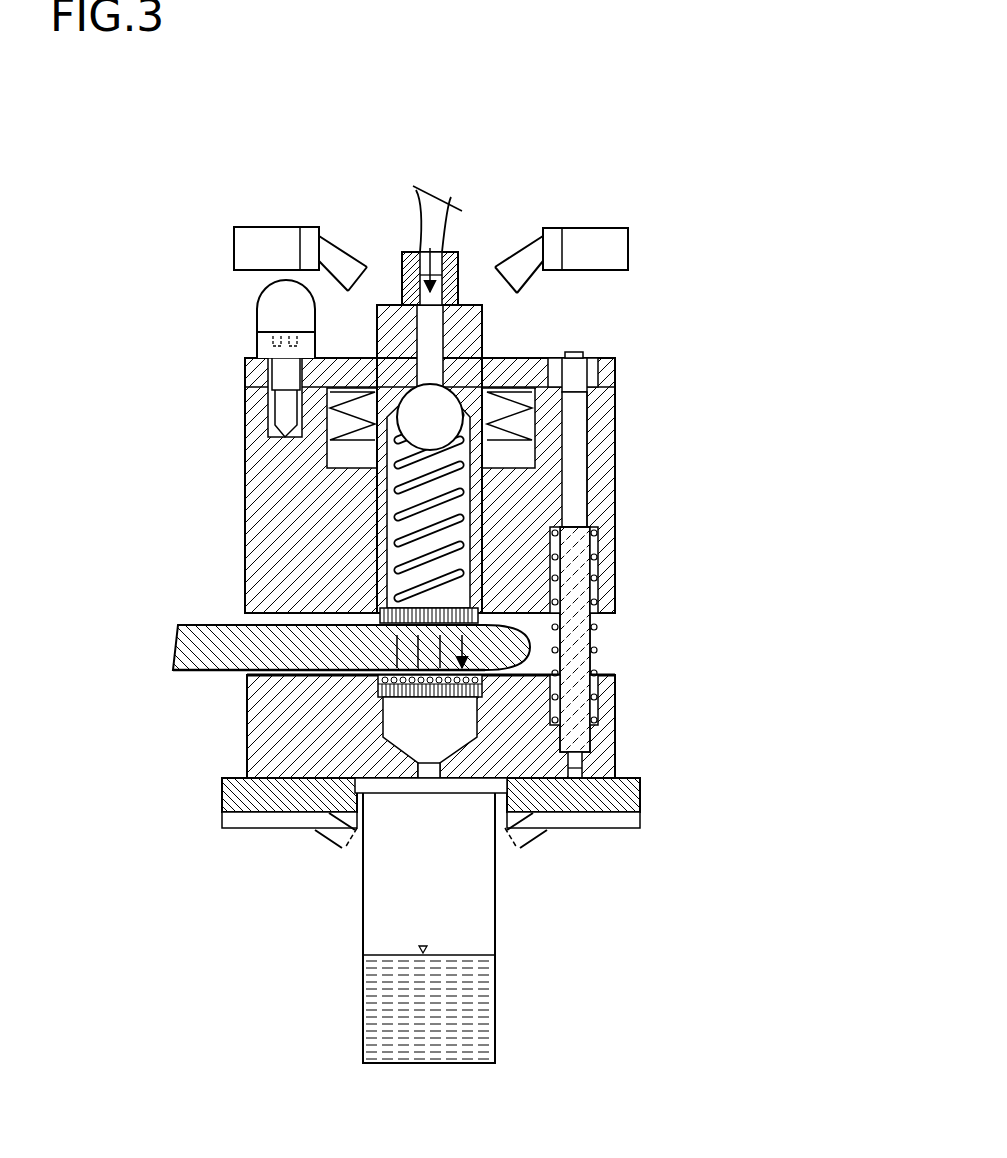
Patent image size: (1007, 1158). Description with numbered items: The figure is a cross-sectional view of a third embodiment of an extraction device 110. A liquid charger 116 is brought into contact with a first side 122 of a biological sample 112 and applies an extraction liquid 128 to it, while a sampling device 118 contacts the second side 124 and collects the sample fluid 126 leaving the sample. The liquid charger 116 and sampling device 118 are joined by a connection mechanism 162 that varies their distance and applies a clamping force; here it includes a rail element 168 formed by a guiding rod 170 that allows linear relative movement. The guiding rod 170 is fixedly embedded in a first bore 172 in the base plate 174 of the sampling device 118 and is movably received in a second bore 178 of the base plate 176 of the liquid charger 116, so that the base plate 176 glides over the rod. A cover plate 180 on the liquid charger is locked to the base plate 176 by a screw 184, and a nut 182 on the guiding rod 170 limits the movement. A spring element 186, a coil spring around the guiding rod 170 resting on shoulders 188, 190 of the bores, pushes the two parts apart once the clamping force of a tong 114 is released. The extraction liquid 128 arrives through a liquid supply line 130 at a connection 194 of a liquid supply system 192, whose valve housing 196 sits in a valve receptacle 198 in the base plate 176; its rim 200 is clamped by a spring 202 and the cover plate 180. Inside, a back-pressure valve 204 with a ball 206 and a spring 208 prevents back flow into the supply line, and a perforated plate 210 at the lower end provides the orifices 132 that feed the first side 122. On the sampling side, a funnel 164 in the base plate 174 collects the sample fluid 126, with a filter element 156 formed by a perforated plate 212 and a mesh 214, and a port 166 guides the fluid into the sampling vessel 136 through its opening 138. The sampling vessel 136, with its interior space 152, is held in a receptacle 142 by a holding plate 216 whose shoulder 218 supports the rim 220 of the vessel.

The extraction device 110 is at (700, 272).
The biological sample 112 is at (187, 645).
The tong 114 is at (247, 258).
The liquid charger 116 is at (247, 518).
The sampling device 118 is at (247, 712).
The first side 122 is at (210, 625).
The second side 124 is at (198, 675).
The sample fluid 126 is at (433, 1053).
The extraction liquid 128 is at (402, 252).
The liquid supply line 130 is at (433, 207).
The orifices 132 is at (575, 623).
The sampling vessel 136 is at (497, 923).
The opening 138 is at (428, 800).
The receptacle 142 is at (526, 953).
The interior space 152 is at (475, 867).
The filter element 156 is at (600, 695).
The connection mechanism 162 is at (580, 642).
The funnel 164 is at (385, 744).
The port 166 is at (407, 763).
The rail element 168 is at (663, 587).
The guiding rod 170 is at (573, 502).
The first bore 172 is at (617, 760).
The base plate 174 is at (250, 703).
The base plate 176 is at (600, 458).
The second bore 178 is at (590, 417).
The cover plate 180 is at (617, 378).
The nut 182 is at (596, 352).
The screw 184 is at (287, 400).
The spring element 186 is at (598, 585).
The shoulder 188 is at (597, 728).
The shoulder 190 is at (593, 520).
The liquid supply system 192 is at (495, 338).
The connection 194 is at (458, 262).
The valve housing 196 is at (338, 455).
The valve receptacle 198 is at (383, 490).
The rim 200 is at (340, 457).
The spring 202 is at (508, 395).
The back-pressure valve 204 is at (573, 487).
The ball 206 is at (417, 408).
The spring 208 is at (395, 575).
The perforated plate 210 is at (560, 572).
The perforated plate 212 is at (754, 757).
The mesh 214 is at (756, 700).
The holding plate 216 is at (630, 790).
The shoulder 218 is at (340, 810).
The rim 220 is at (340, 797).